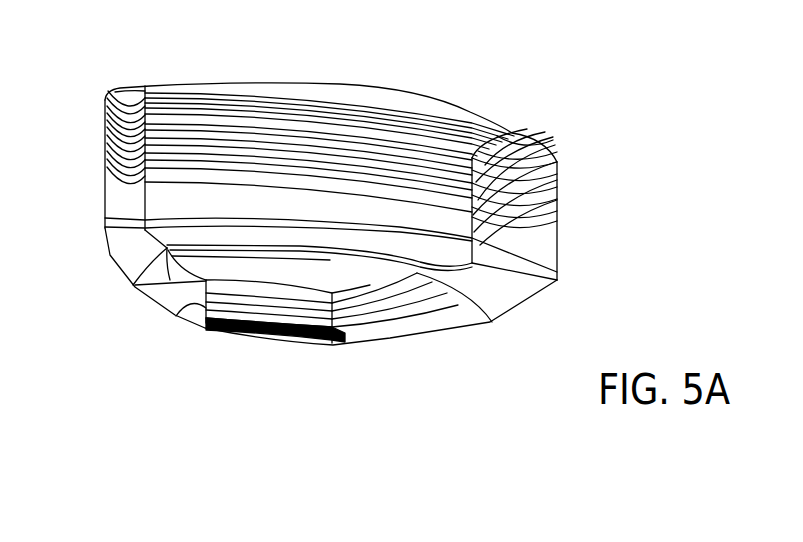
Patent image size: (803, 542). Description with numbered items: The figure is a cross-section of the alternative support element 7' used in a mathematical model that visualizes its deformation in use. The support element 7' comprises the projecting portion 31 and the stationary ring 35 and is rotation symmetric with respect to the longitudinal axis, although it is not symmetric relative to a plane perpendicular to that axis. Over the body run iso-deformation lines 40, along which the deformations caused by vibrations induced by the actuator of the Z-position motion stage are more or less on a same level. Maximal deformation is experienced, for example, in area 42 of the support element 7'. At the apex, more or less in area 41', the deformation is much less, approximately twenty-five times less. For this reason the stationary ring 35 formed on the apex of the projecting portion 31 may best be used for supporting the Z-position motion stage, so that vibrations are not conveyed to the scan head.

The iso-deformation lines 40 is at (530, 223).
The area 41' is at (537, 154).
The area 42 is at (523, 293).
The projecting portion 31 is at (103, 150).
The stationary ring 35 is at (144, 90).
The support element 7' is at (259, 296).